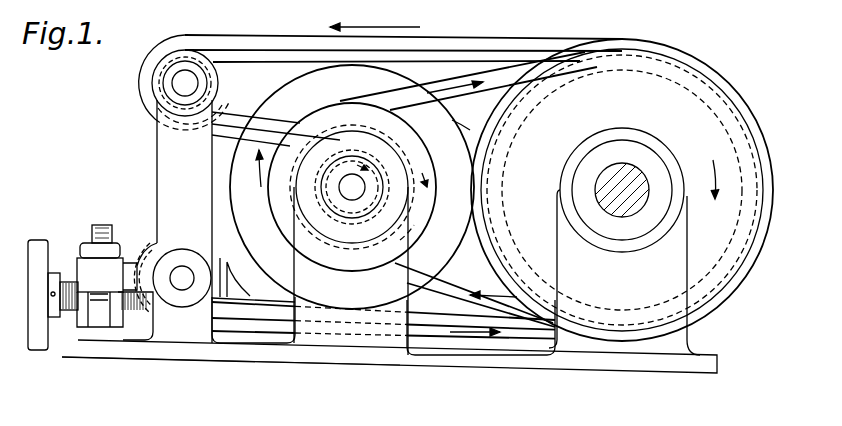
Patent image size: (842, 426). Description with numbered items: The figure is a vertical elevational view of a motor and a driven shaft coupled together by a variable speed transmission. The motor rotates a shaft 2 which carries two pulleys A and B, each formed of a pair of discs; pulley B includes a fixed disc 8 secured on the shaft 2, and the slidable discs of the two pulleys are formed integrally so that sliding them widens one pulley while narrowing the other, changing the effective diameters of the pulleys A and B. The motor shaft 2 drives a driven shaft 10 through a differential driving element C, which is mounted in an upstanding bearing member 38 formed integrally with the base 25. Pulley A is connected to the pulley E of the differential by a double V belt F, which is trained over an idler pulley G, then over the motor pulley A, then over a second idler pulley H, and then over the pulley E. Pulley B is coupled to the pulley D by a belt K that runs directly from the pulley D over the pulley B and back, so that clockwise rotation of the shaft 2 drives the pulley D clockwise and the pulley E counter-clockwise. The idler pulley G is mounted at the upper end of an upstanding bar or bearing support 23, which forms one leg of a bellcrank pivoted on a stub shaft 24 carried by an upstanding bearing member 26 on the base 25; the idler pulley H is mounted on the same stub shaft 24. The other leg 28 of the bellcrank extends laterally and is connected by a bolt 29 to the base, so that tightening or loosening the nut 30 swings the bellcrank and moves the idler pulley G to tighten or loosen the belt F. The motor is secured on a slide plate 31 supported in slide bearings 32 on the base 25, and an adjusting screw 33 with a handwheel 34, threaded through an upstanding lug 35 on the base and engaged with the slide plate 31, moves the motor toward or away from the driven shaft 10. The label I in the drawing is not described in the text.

The shaft 2 is at (345, 190).
The fixed disc 8 is at (415, 232).
The driven shaft 10 is at (622, 212).
The bearing support 23 is at (157, 150).
The stub shaft 24 is at (182, 266).
The base 25 is at (200, 358).
The bearing member 26 is at (165, 341).
The leg 28 is at (134, 262).
The bolt 29 is at (100, 225).
The nut 30 is at (80, 244).
The slide plate 31 is at (280, 298).
The slide bearings 32 is at (277, 338).
The adjusting screw 33 is at (72, 312).
The handwheel 34 is at (28, 343).
The lug 35 is at (118, 318).
The bearing member 38 is at (680, 249).
The pulley A is at (410, 136).
The pulley B is at (433, 219).
The differential driving element C is at (713, 70).
The pulley D is at (708, 97).
The pulley E is at (722, 116).
The belt F is at (484, 38).
The idler pulley G is at (222, 80).
The idler pulley H is at (238, 282).
The belt I is at (460, 128).
The belt K is at (502, 82).